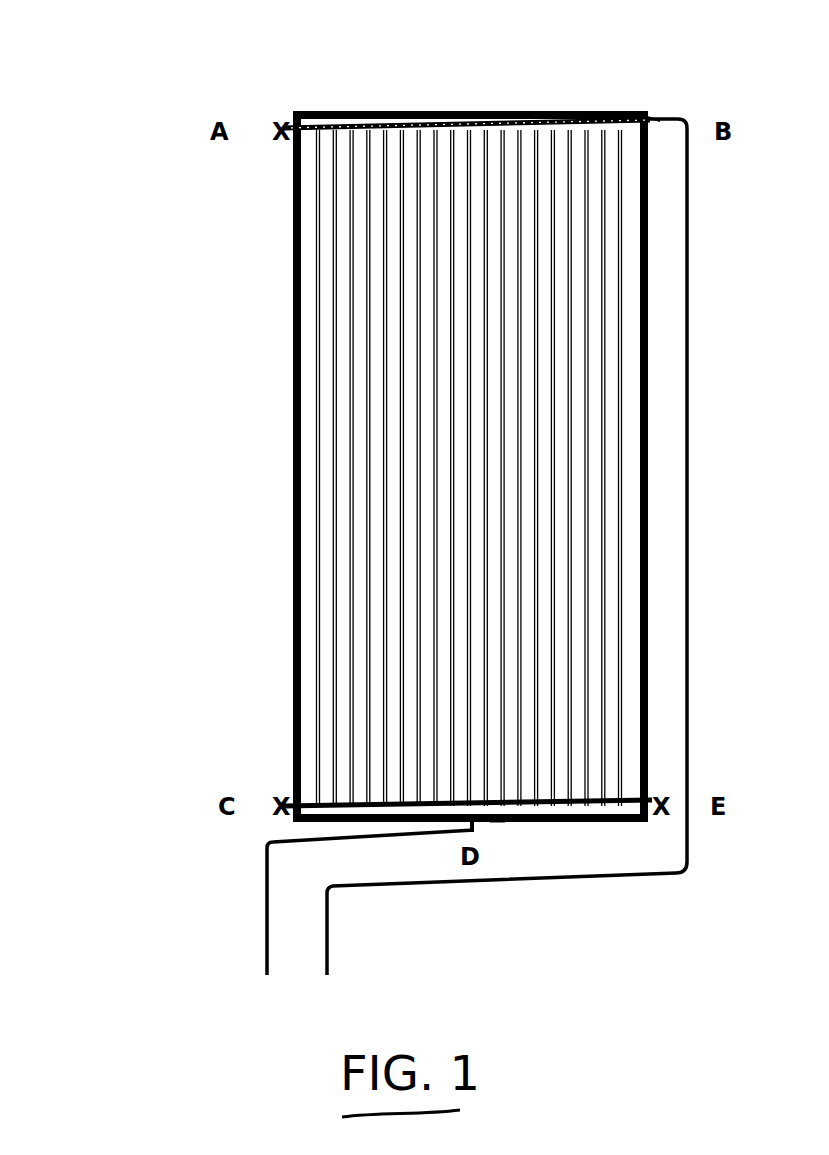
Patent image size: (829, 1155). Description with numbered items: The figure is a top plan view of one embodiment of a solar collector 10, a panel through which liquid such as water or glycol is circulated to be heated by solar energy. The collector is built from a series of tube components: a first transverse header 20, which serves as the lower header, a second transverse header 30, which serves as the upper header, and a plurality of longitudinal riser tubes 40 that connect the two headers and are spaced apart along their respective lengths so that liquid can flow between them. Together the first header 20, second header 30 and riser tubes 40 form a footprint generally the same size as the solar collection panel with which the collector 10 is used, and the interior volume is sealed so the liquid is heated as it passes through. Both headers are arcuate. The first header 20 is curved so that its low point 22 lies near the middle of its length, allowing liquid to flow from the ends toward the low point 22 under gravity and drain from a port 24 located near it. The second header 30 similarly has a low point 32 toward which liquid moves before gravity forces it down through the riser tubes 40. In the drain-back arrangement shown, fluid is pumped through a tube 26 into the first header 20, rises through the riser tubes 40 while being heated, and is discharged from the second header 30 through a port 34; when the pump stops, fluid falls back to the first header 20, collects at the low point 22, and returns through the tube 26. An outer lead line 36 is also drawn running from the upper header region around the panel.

The solar collector 10 is at (145, 284).
The first transverse header 20 is at (310, 800).
The low point 22 is at (477, 824).
The port 24 is at (498, 822).
The tube 26 is at (266, 895).
The second transverse header 30 is at (526, 133).
The low point 32 is at (474, 133).
The port 34 is at (648, 120).
The outer lead wire 36 is at (690, 476).
The longitudinal riser tubes 40 is at (355, 478).